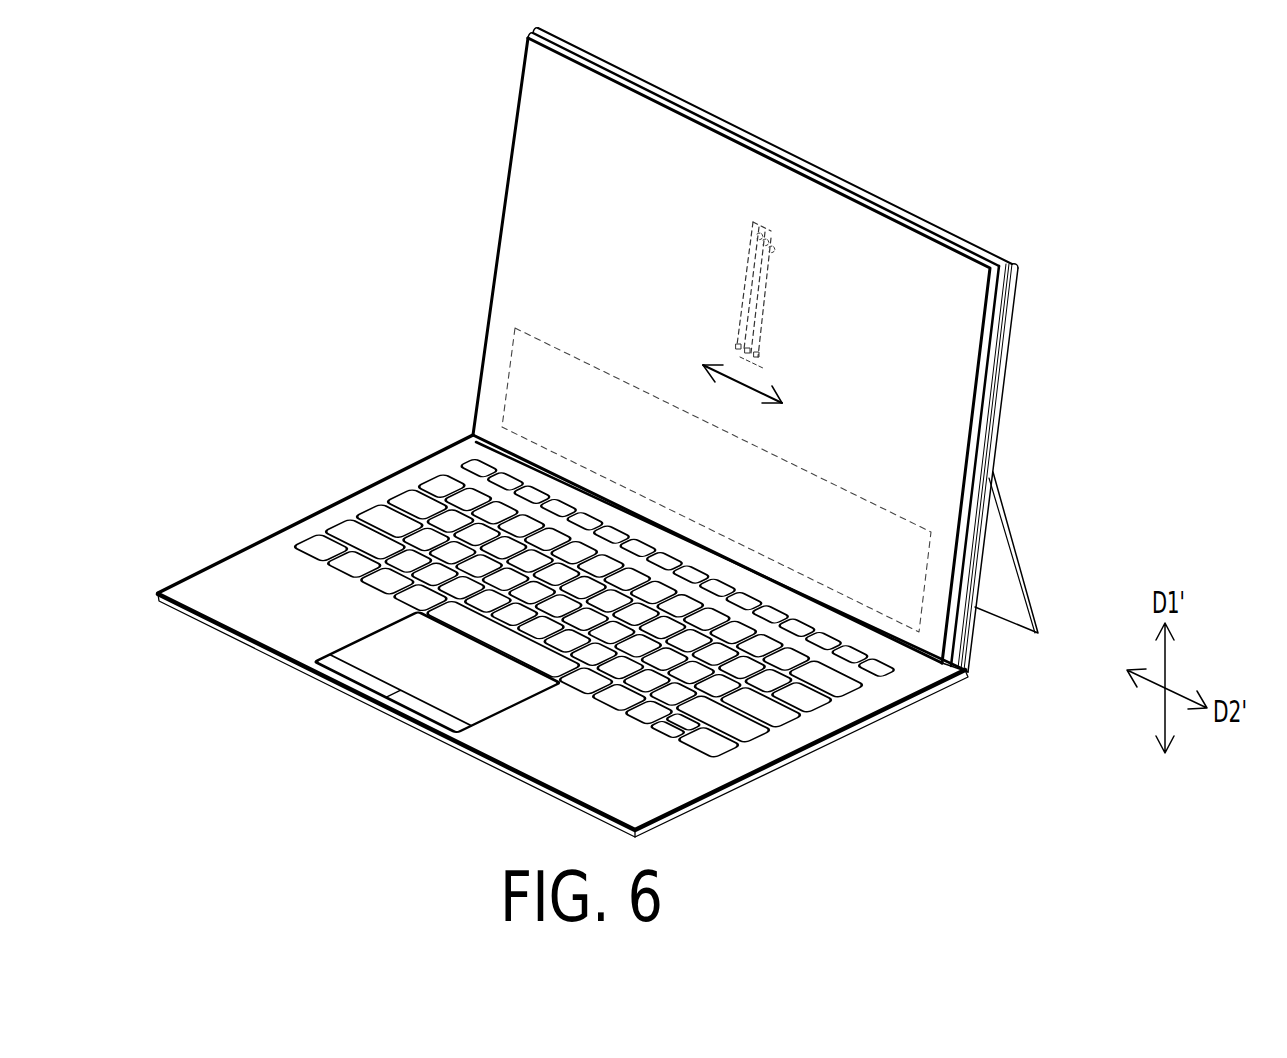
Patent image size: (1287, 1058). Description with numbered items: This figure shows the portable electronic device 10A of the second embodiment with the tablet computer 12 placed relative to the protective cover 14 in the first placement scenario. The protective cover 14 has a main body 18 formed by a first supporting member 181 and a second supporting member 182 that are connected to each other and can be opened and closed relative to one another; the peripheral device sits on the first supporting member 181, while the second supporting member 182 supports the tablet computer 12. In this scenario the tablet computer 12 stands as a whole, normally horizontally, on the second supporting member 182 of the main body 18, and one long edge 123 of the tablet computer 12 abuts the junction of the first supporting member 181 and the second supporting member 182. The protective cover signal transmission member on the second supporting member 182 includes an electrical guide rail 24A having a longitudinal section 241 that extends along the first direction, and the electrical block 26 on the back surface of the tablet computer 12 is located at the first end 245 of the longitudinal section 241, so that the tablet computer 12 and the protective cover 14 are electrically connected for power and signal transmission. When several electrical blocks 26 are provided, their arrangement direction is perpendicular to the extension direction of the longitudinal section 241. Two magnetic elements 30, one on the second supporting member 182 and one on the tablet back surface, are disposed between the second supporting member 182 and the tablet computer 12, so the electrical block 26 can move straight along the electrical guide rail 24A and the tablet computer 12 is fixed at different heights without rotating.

The portable electronic device 10A is at (283, 74).
The tablet computer 12 is at (895, 257).
The protective cover 14 is at (563, 612).
The main body 18 is at (1002, 688).
The first supporting member 181 is at (910, 703).
The second supporting member 182 is at (973, 632).
The electrical guide rail 24A is at (914, 292).
The longitudinal section 241 is at (777, 276).
The first end 245 is at (770, 365).
The electrical block 26 is at (765, 352).
The magnetic element 30 is at (512, 372).
The long edge 123 is at (507, 460).